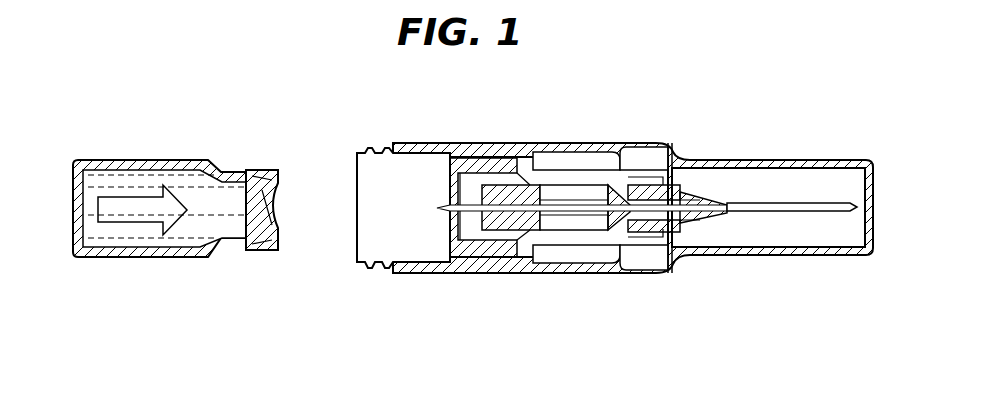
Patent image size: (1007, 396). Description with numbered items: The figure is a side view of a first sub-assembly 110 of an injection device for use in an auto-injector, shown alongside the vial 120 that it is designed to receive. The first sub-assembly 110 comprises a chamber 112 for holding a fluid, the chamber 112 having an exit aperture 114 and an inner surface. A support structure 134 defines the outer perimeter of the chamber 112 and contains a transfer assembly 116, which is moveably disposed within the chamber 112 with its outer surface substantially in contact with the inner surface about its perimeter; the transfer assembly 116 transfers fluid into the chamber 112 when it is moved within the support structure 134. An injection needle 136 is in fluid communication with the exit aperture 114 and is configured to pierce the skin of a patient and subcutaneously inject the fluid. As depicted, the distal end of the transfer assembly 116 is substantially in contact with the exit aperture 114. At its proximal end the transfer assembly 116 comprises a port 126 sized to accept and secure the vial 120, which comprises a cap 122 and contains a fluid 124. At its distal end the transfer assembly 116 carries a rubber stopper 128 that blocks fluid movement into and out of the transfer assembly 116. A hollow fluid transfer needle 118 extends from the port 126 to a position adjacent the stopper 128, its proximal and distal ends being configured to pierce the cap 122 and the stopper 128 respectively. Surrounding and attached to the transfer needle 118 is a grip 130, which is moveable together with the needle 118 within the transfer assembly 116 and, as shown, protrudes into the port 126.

The first sub-assembly 110 is at (694, 104).
The chamber 112 is at (563, 237).
The exit aperture 114 is at (672, 212).
The transfer assembly 116 is at (582, 182).
The hollow fluid transfer needle 118 is at (476, 195).
The vial 120 is at (120, 160).
The cap 122 is at (268, 172).
The fluid 124 is at (130, 258).
The port 126 is at (375, 147).
The stopper 128 is at (620, 248).
The grip 130 is at (488, 250).
The support structure 134 is at (408, 274).
The injection needle 136 is at (818, 211).